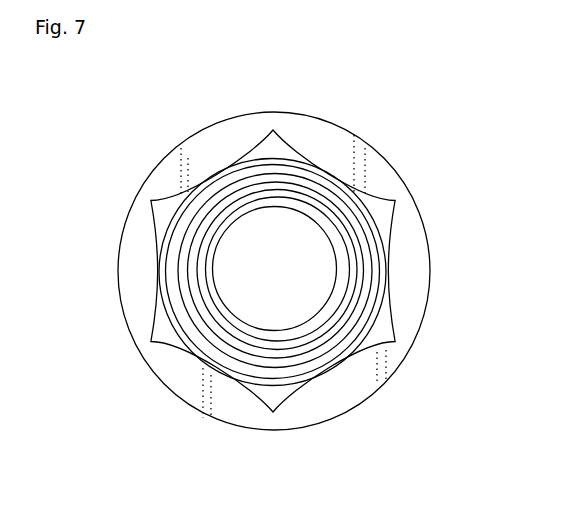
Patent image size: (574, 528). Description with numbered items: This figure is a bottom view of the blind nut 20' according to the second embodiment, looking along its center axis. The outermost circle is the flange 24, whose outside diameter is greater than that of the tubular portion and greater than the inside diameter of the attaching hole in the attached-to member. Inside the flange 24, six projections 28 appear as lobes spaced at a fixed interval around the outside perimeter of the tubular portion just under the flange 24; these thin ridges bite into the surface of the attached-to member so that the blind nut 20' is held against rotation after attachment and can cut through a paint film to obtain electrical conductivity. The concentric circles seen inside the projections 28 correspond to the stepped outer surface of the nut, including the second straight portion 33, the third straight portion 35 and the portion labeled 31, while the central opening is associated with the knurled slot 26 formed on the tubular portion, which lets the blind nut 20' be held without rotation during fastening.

The blind nut 20' is at (322, 264).
The flange 24 is at (420, 214).
The knurled slot 26 is at (230, 255).
The projections 28 is at (276, 128).
The inner ring 31 is at (382, 286).
The second straight portion 33 is at (387, 275).
The third straight portion 35 is at (388, 258).